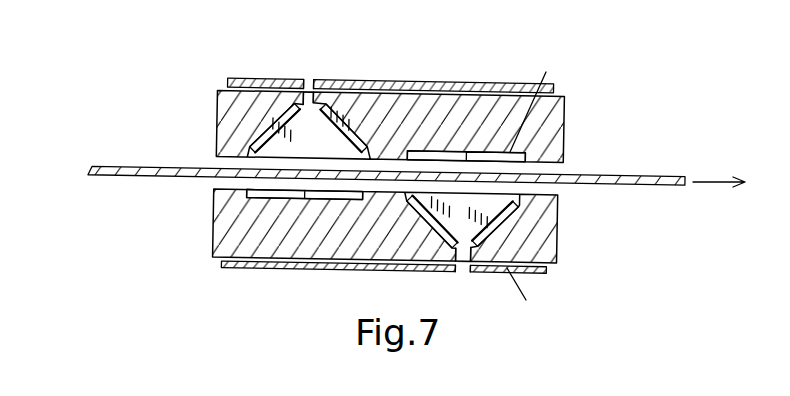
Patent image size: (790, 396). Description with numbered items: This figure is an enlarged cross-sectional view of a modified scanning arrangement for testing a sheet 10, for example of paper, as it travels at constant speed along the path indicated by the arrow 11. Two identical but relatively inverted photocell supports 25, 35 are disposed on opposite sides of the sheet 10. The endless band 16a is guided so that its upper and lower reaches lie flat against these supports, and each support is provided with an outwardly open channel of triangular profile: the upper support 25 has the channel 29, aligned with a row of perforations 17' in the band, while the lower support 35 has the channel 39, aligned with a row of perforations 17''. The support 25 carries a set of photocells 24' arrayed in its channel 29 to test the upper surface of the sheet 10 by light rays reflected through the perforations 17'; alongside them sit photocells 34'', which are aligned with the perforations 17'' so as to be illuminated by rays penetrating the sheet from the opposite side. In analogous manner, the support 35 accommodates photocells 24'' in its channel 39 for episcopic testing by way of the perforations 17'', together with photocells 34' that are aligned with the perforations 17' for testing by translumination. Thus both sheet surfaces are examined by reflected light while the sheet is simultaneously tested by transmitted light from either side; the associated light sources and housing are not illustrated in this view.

The sheet 10 is at (90, 176).
The arrow indicating travel direction 11 is at (717, 184).
The band 16a is at (403, 82).
The perforations 17' is at (303, 65).
The perforations 17'' is at (480, 279).
The photocells 24' is at (307, 89).
The photocells 24'' is at (507, 250).
The photocell support 25 is at (216, 99).
The channel 29 is at (274, 138).
The photocells 34' is at (451, 254).
The photocells 34'' is at (540, 105).
The photocell support 35 is at (213, 230).
The channel 39 is at (497, 196).